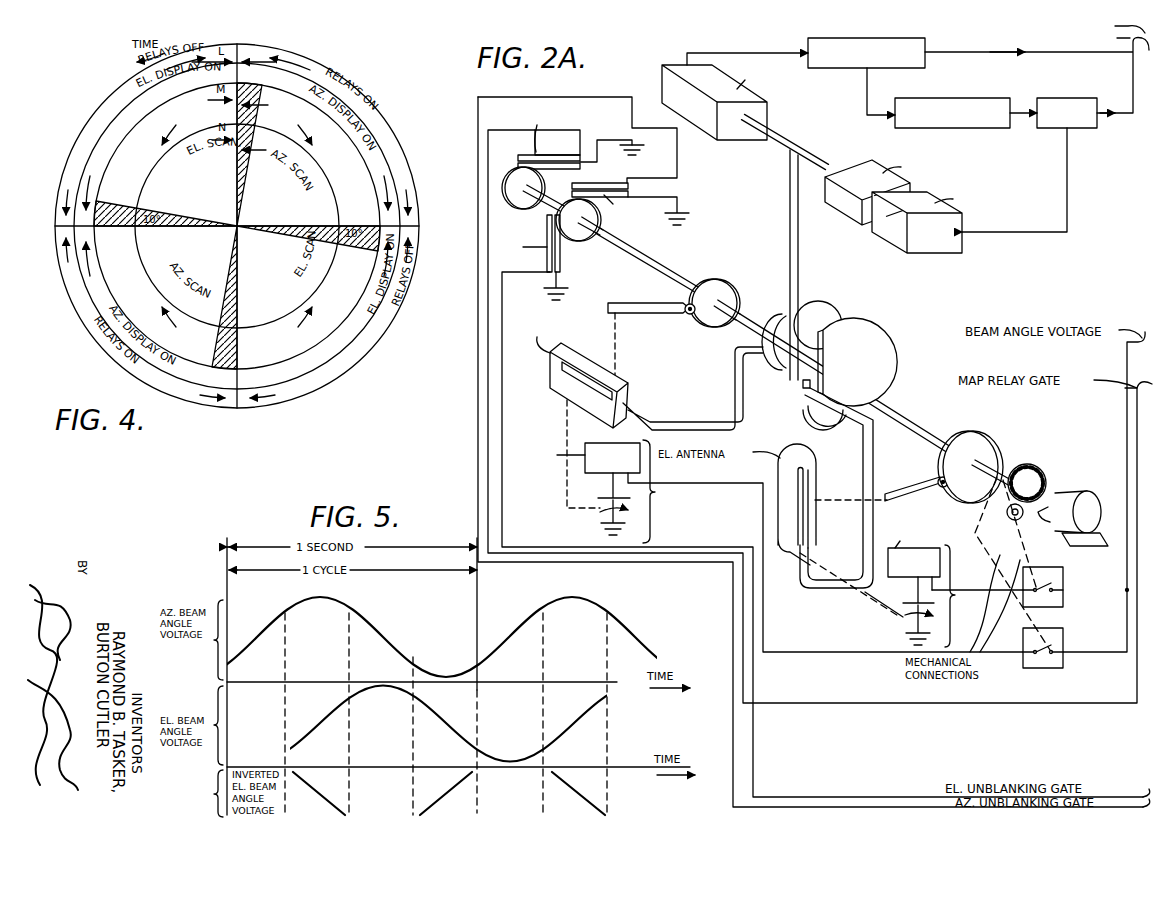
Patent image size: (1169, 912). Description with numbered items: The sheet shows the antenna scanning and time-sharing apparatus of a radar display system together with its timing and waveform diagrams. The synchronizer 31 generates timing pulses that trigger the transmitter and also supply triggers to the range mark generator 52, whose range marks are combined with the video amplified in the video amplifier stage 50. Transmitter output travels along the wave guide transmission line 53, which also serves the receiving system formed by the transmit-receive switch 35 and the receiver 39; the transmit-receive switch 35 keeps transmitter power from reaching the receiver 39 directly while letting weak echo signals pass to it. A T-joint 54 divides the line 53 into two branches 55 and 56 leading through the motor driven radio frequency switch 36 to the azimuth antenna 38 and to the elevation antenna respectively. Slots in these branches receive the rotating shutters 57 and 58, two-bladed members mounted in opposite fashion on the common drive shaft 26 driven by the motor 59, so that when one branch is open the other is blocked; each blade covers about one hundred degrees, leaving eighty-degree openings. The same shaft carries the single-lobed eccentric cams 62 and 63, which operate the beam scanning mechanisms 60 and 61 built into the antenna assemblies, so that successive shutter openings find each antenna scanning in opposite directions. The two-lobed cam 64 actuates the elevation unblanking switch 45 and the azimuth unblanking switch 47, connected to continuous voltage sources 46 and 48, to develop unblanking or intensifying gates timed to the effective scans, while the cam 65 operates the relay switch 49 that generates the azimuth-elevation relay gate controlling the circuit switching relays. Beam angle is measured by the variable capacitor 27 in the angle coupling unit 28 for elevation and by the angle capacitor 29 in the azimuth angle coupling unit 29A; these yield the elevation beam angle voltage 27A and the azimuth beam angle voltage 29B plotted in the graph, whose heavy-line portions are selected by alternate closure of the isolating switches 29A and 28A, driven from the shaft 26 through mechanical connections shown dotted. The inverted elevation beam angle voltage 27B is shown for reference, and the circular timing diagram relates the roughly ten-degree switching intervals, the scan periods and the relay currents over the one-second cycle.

In FIG. 2A, the synchronizer 31 is at (925, 41).
In FIG. 2A, the T-joint 54 is at (748, 83).
In FIG. 2A, the range mark generator 52 is at (992, 98).
In FIG. 2A, the video amplifier stage 50 is at (1082, 98).
In FIG. 2A, the wave guide transmission line 53 is at (788, 186).
In FIG. 2A, the transmit-receive switch 35 is at (853, 218).
In FIG. 2A, the receiver 39 is at (942, 254).
In FIG. 2A, the radio frequency switch 36 is at (843, 311).
In FIG. 2A, the relay switch 49 is at (533, 157).
In FIG. 2A, the azimuth unblanking switch 47 is at (600, 185).
In FIG. 2A, the continuous voltage source 48 is at (690, 219).
In FIG. 2A, the cam 65 is at (503, 178).
In FIG. 2A, the elevation unblanking switch 45 is at (560, 271).
In FIG. 2A, the continuous voltage source 46 is at (570, 297).
In FIG. 2A, the two-lobed cam 64 is at (590, 242).
In FIG. 2A, the drive shaft 26 is at (683, 281).
In FIG. 2A, the eccentric cam 62 is at (731, 288).
In FIG. 2A, the rotating shutter 57 is at (777, 318).
In FIG. 2A, the rotating shutter 58 is at (890, 347).
In FIG. 2A, the transmission line branch 55 is at (763, 376).
In FIG. 2A, the transmission line branch 56 is at (807, 395).
In FIG. 2A, the azimuth antenna 38 is at (578, 362).
In FIG. 2A, the antenna beam scanning mechanism 60 is at (626, 344).
In FIG. 2A, the variable capacitor 27 is at (598, 498).
In FIG. 2A, the angle coupling unit 28 is at (661, 491).
In FIG. 2A, the antenna beam scanning mechanism 61 is at (848, 506).
In FIG. 2A, the eccentric cam 63 is at (994, 441).
In FIG. 2A, the motor 59 is at (1079, 494).
In FIG. 2A, the angle capacitor 29 is at (903, 617).
In FIG. 2A, the azimuth angle coupling unit 29A is at (1081, 572).
In FIG. 2A, the isolating switch 28A is at (1063, 640).
In FIG. 5, the azimuth beam angle voltage 29B is at (352, 601).
In FIG. 5, the elevation beam angle voltage 27A is at (368, 684).
In FIG. 5, the inverted elevation beam angle voltage 27B is at (330, 796).